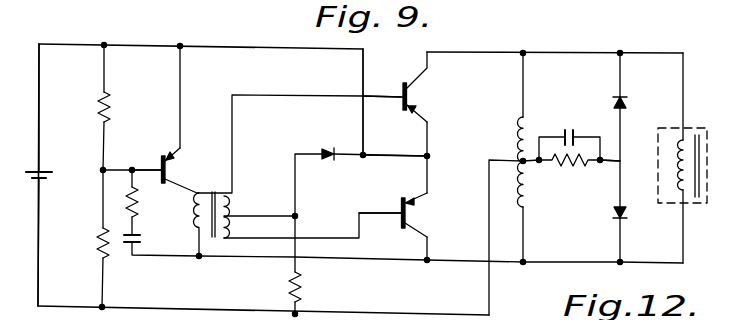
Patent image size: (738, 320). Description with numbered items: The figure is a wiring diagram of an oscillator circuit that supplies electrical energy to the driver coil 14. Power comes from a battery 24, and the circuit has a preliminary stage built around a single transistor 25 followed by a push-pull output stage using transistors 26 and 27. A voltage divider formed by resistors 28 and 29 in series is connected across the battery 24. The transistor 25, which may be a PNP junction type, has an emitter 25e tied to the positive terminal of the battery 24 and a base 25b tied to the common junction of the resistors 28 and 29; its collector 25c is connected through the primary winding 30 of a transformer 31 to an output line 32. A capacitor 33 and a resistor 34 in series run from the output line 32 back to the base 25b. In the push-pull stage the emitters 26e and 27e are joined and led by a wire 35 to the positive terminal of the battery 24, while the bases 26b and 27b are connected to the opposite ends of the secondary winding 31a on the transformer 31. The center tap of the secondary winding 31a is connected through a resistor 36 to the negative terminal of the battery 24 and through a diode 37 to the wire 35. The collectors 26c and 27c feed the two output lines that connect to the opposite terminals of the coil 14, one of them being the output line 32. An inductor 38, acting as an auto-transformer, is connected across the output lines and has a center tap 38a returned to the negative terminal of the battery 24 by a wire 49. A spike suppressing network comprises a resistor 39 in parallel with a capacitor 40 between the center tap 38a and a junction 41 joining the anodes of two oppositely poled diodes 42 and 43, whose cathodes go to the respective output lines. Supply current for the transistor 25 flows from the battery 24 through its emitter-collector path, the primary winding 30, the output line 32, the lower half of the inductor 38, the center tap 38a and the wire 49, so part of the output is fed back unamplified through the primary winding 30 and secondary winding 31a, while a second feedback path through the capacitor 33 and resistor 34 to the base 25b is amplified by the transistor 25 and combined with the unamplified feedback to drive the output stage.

The coil 14 is at (698, 164).
The battery 24 is at (28, 168).
The transistor 25 is at (173, 167).
The base 25b is at (144, 175).
The collector 25c is at (176, 186).
The emitter 25e is at (175, 156).
The transistor 26 is at (421, 100).
The base 26b is at (399, 92).
The collector 26c is at (422, 80).
The emitter 26e is at (429, 99).
The transistor 27 is at (413, 213).
The base 27b is at (386, 216).
The collector 27c is at (419, 224).
The emitter 27e is at (420, 196).
The resistor 28 is at (98, 120).
The resistor 29 is at (97, 242).
The primary winding 30 is at (193, 226).
The transformer 31 is at (212, 235).
The secondary winding 31a is at (227, 197).
The output line 32 is at (324, 262).
The capacitor 33 is at (126, 245).
The resistor 34 is at (128, 200).
The wire 35 is at (363, 78).
The resistor 36 is at (288, 288).
The diode 37 is at (328, 144).
The inductor 38 is at (516, 142).
The center tap 38a is at (517, 168).
The resistor 39 is at (570, 168).
The capacitor 40 is at (567, 132).
The junction 41 is at (624, 160).
The diode 42 is at (628, 108).
The diode 43 is at (624, 216).
The wire 49 is at (190, 306).